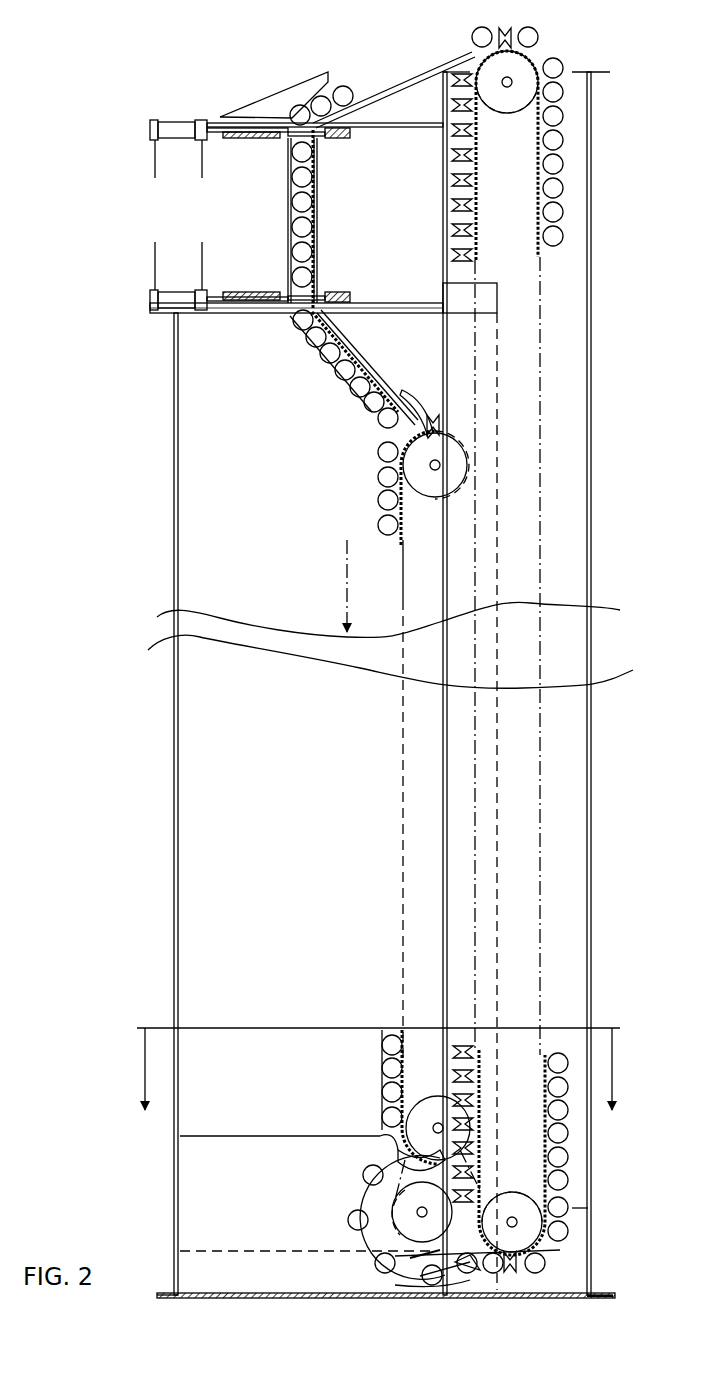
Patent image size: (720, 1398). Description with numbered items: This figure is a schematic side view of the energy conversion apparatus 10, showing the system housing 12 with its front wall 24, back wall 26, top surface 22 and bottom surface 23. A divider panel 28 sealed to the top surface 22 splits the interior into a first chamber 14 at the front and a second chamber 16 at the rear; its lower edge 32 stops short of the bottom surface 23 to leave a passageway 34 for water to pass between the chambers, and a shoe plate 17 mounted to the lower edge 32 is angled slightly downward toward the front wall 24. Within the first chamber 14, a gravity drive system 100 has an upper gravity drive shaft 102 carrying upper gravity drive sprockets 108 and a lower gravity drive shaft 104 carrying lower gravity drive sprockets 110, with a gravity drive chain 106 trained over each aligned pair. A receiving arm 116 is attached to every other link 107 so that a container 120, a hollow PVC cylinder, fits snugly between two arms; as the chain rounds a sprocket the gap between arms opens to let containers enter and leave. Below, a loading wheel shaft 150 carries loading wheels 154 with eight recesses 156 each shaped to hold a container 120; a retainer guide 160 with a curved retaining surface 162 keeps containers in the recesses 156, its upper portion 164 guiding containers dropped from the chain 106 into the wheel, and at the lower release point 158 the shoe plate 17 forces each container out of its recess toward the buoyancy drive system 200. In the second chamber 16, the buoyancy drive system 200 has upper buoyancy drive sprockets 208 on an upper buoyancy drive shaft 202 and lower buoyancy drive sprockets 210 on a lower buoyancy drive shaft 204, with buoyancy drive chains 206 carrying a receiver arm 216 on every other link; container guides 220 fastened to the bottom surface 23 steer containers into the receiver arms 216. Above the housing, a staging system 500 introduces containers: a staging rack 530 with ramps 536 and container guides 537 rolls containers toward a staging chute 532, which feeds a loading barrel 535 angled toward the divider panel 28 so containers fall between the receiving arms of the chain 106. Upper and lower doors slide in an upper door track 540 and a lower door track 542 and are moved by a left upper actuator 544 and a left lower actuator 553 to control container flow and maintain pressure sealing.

The energy conversion apparatus 10 is at (105, 65).
The system housing 12 is at (173, 410).
The first chamber 14 is at (200, 505).
The second chamber 16 is at (592, 800).
The shoe plate 17 is at (385, 1265).
The top surface 22 is at (590, 72).
The bottom surface 23 is at (215, 1300).
The front wall 24 is at (173, 730).
The back wall 26 is at (592, 730).
The divider panel 28 is at (445, 715).
The lower edge 32 is at (455, 1278).
The passageway 34 is at (440, 1285).
The gravity drive system 100 is at (355, 440).
The upper gravity drive shaft 102 is at (430, 465).
The lower gravity drive shaft 104 is at (420, 1120).
The gravity drive chain 106 is at (380, 525).
The link 107 is at (405, 1040).
The upper gravity drive sprocket 108 is at (435, 490).
The lower gravity drive sprocket 110 is at (390, 1085).
The receiving arm 116 is at (432, 410).
The container 120 is at (473, 40).
The loading wheel shaft 150 is at (415, 1212).
The loading wheel 154 is at (362, 1236).
The recess 156 is at (385, 1175).
The lower release point 158 is at (500, 1270).
The retainer guide 160 is at (215, 1136).
The curved retaining surface 162 is at (340, 1255).
The upper portion 164 is at (390, 1140).
The buoyancy drive system 200 is at (580, 1200).
The upper buoyancy drive shaft 202 is at (512, 82).
The lower buoyancy drive shaft 204 is at (545, 1240).
The buoyancy drive chain 206 is at (565, 1125).
The upper buoyancy drive sprocket 208 is at (510, 102).
The lower buoyancy drive sprocket 210 is at (555, 1222).
The receiver arm 216 is at (512, 30).
The container guide 220 is at (600, 1295).
The staging system 500 is at (252, 60).
The staging rack 530 is at (366, 95).
The staging chute 532 is at (318, 215).
The loading barrel 535 is at (342, 385).
The ramp 536 is at (415, 128).
The container guide 537 is at (284, 97).
The upper door track 540 is at (258, 138).
The lower door track 542 is at (250, 262).
The left upper actuator 544 is at (178, 125).
The left lower actuator 553 is at (180, 292).